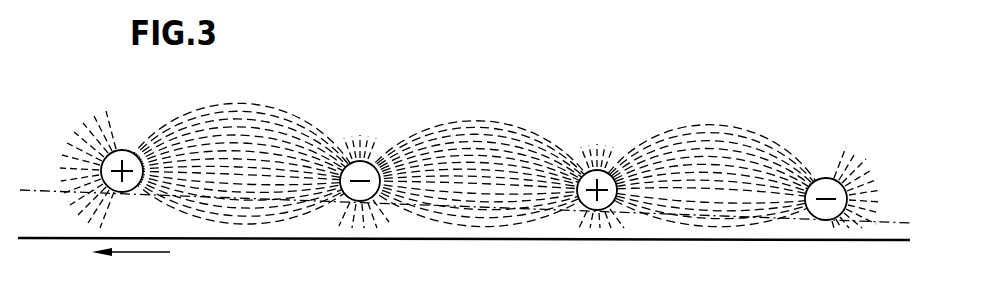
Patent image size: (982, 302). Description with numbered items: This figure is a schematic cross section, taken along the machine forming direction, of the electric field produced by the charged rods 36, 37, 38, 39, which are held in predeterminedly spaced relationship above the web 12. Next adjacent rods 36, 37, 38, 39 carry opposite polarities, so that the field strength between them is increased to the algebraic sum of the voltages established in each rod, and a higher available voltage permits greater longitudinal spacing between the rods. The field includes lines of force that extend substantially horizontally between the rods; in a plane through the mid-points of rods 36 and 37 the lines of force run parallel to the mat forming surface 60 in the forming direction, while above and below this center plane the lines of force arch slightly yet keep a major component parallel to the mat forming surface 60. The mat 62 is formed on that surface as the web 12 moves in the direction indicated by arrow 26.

The web 12 is at (470, 241).
The direction of surface movement arrow 26 is at (153, 253).
The charged rod 36 is at (116, 150).
The charged rod 37 is at (358, 161).
The charged rod 38 is at (593, 170).
The charged rod 39 is at (823, 178).
The mat forming surface 60 is at (40, 190).
The mat 62 is at (325, 229).